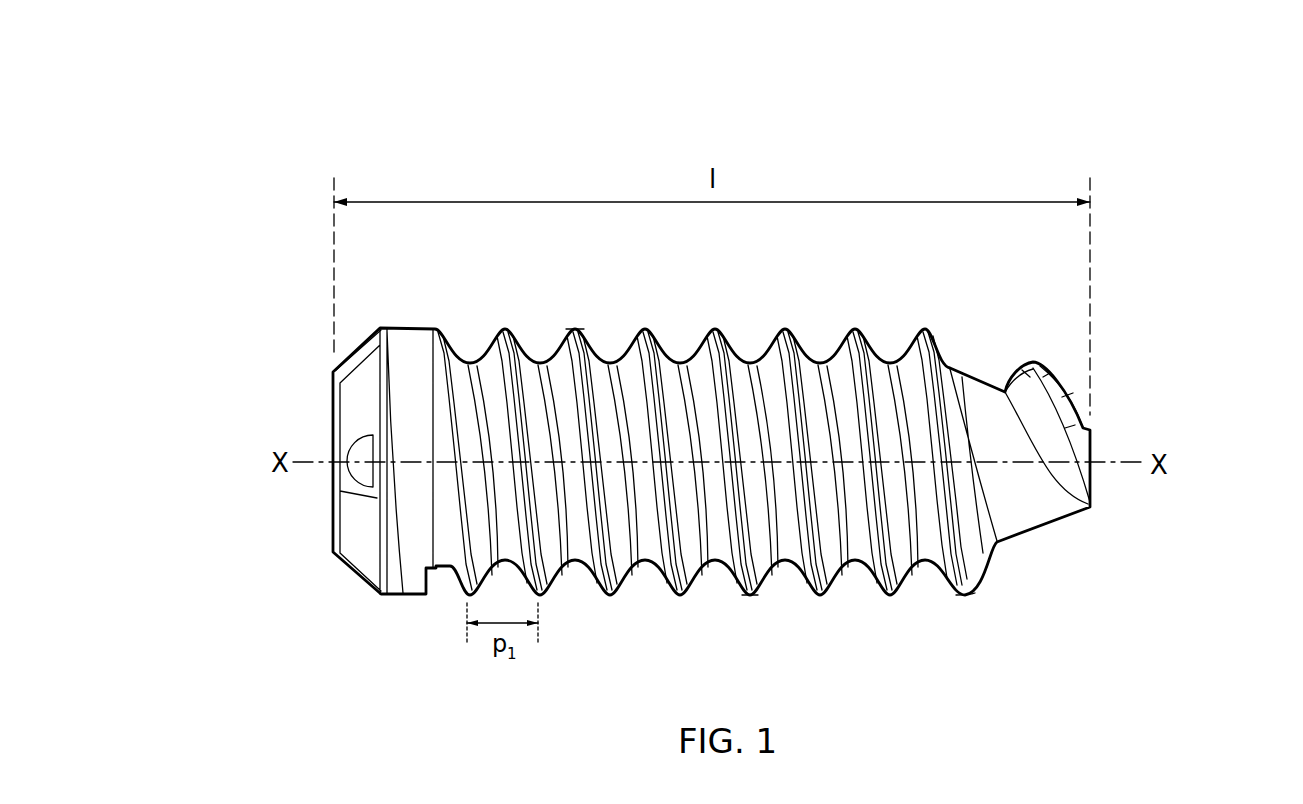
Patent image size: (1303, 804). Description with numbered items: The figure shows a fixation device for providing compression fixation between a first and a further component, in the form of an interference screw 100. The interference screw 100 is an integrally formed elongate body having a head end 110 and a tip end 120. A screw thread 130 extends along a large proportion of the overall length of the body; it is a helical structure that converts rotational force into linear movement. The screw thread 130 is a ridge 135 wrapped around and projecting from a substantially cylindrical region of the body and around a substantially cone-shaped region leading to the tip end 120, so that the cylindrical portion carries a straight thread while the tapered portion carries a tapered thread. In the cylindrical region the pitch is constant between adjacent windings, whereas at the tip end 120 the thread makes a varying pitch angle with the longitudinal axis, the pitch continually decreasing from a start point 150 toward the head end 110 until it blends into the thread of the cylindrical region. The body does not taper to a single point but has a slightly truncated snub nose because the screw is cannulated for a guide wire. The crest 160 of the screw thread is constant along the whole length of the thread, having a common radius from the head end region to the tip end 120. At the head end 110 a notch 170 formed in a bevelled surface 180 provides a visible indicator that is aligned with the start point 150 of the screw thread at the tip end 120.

The interference screw 100 is at (1016, 130).
The head end 110 is at (227, 462).
The tip end 120 is at (1199, 457).
The screw thread 130 is at (574, 330).
The ridge 135 is at (752, 596).
The start point 150 is at (1112, 490).
The crest 160 is at (791, 304).
The notch 170 is at (367, 472).
The bevelled surface 180 is at (357, 353).